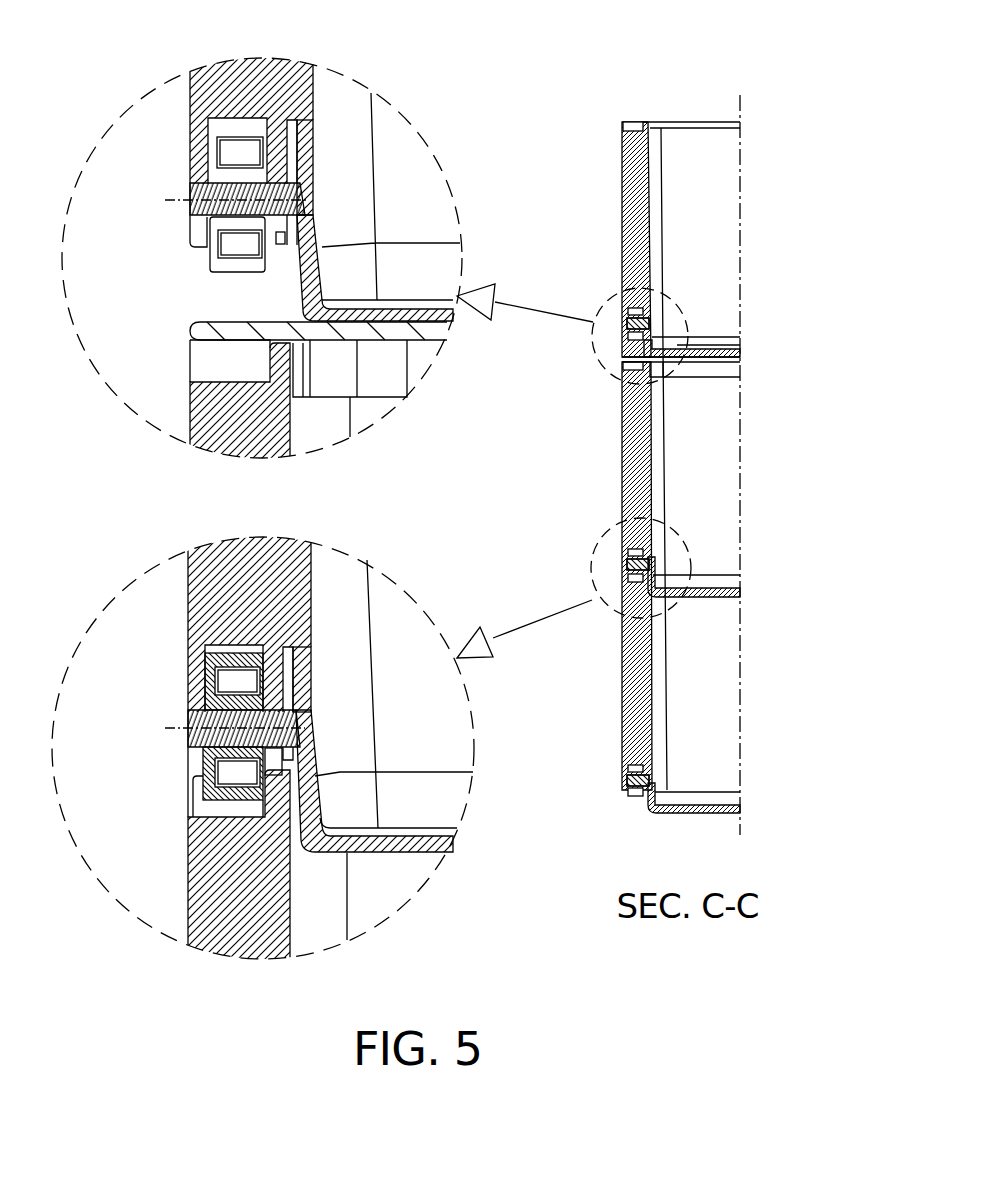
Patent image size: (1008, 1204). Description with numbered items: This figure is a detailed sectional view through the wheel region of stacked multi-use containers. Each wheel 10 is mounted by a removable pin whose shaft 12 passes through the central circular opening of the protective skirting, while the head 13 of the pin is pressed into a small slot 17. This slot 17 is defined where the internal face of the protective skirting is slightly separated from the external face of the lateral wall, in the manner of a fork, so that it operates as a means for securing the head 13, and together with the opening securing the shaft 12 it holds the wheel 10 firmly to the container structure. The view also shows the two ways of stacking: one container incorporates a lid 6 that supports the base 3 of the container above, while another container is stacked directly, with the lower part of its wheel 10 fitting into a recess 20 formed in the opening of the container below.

The base 3 is at (423, 275).
The lid 6 is at (190, 323).
The wheel 10 is at (215, 131).
The shaft 12 is at (195, 208).
The head 13 is at (292, 173).
The slot 17 is at (290, 150).
The recess 20 is at (208, 367).